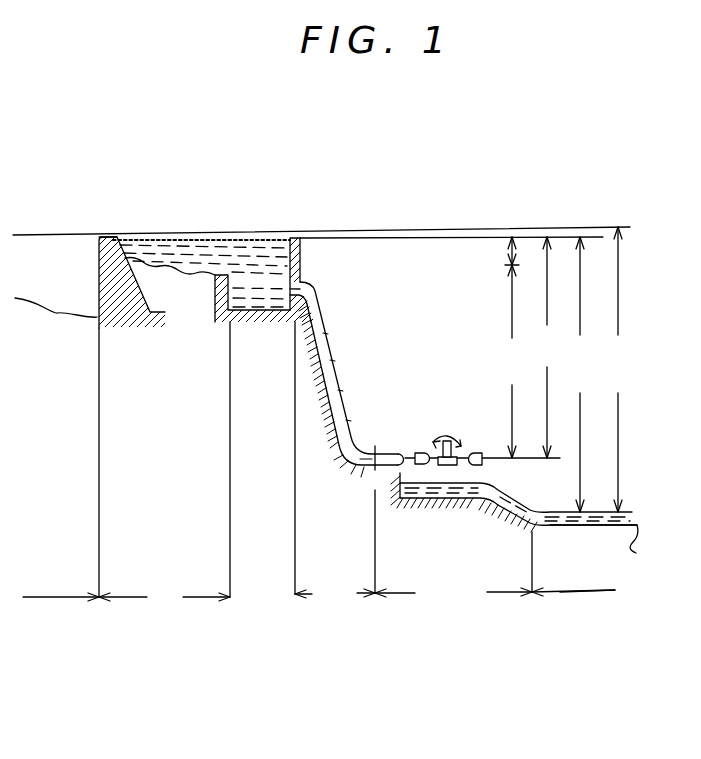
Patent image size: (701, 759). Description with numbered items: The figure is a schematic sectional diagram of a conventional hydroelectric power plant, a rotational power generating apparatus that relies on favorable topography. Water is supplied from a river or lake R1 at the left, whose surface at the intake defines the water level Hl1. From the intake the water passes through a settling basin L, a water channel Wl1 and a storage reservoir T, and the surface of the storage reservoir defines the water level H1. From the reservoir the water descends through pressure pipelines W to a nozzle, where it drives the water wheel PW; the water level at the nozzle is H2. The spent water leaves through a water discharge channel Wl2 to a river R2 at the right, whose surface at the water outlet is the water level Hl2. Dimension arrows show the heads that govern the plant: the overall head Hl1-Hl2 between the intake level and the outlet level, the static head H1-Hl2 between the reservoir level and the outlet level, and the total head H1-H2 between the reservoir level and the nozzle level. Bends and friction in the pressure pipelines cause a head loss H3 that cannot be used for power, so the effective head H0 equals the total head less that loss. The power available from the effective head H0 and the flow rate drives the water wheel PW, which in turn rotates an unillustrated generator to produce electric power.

The river or lake R1 is at (60, 596).
The water level at the intake Hl1 is at (110, 233).
The water level of storage reservoir H1 is at (295, 237).
The settling basin L is at (126, 596).
The storage reservoir T is at (295, 594).
The pressure pipelines W is at (342, 390).
The water channel Wl1 is at (335, 463).
The water discharge channel Wl2 is at (495, 547).
The water wheel PW is at (462, 440).
The head loss H3 is at (507, 265).
The effective head H0 is at (511, 361).
The total head H1-H2 is at (544, 347).
The static head H1-Hl2 is at (578, 369).
The overall head Hl1-Hl2 is at (621, 370).
The water level at the nozzle H2 is at (530, 460).
The river R2 is at (583, 592).
The water level at the water outlet Hl2 is at (628, 527).